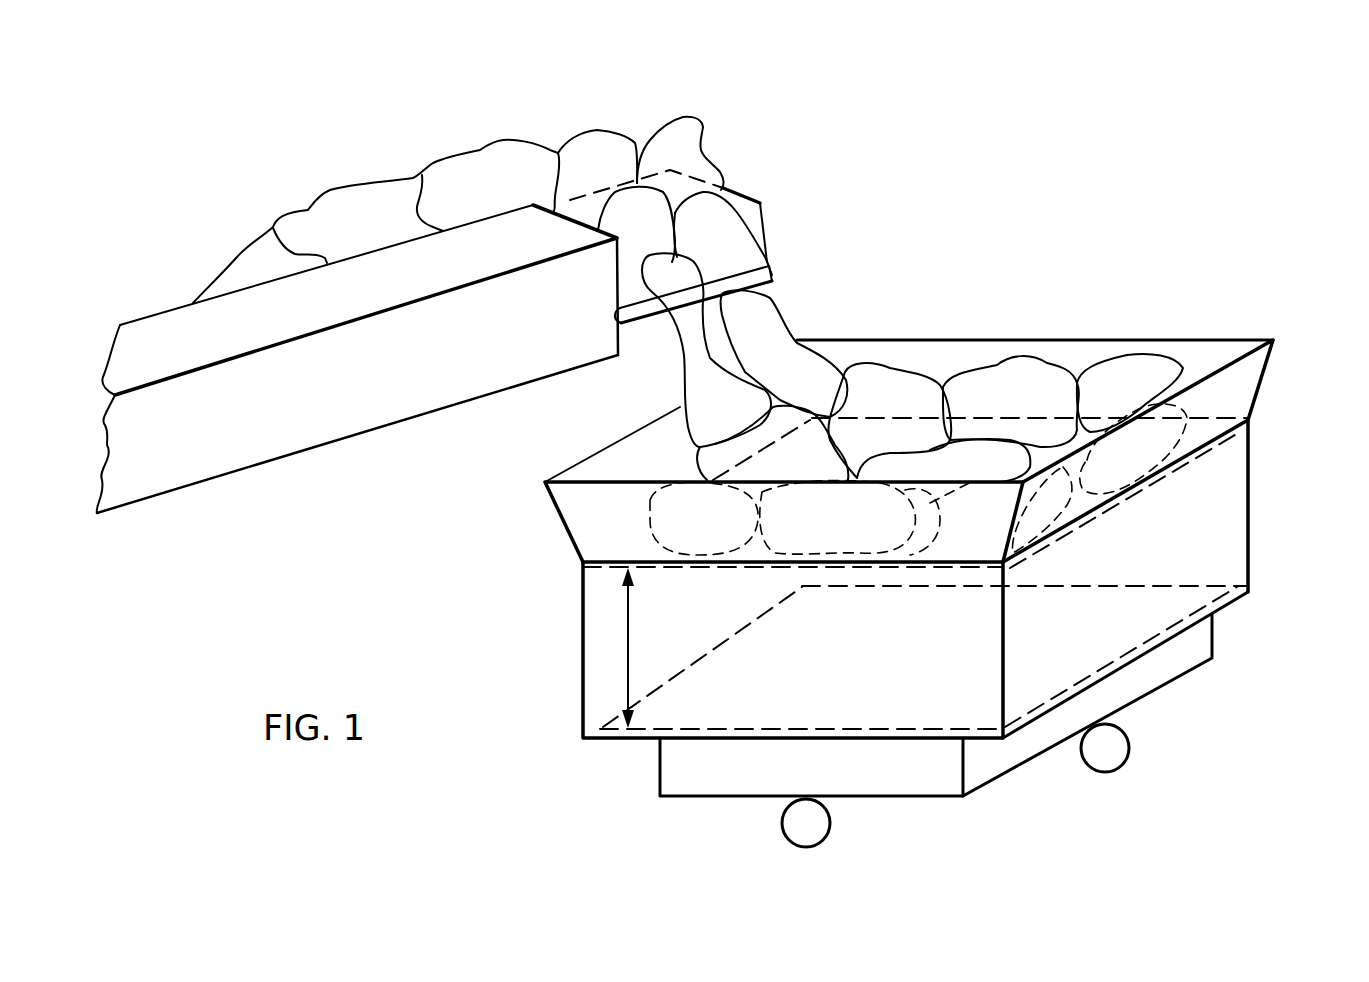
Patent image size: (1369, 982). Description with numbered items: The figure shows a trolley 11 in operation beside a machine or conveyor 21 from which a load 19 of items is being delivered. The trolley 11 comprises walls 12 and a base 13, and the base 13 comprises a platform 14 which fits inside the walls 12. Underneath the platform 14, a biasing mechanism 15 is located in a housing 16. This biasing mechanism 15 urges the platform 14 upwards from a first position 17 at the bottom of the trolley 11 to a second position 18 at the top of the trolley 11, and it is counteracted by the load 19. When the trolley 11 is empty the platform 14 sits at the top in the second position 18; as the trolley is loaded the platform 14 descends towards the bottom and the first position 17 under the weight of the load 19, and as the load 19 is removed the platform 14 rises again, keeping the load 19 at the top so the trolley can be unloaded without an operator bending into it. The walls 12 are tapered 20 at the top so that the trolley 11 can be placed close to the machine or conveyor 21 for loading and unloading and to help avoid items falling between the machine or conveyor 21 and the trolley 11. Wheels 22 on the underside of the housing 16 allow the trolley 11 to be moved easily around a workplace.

The trolley 11 is at (1270, 485).
The walls 12 is at (592, 640).
The base 13 is at (1160, 648).
The platform 14 is at (690, 715).
The biasing mechanism 15 is at (943, 788).
The housing 16 is at (1015, 773).
The first position 17 is at (603, 723).
The second position 18 is at (608, 568).
The load 19 is at (695, 155).
The taper 20 is at (557, 468).
The machine or conveyor 21 is at (185, 477).
The wheels 22 is at (817, 837).